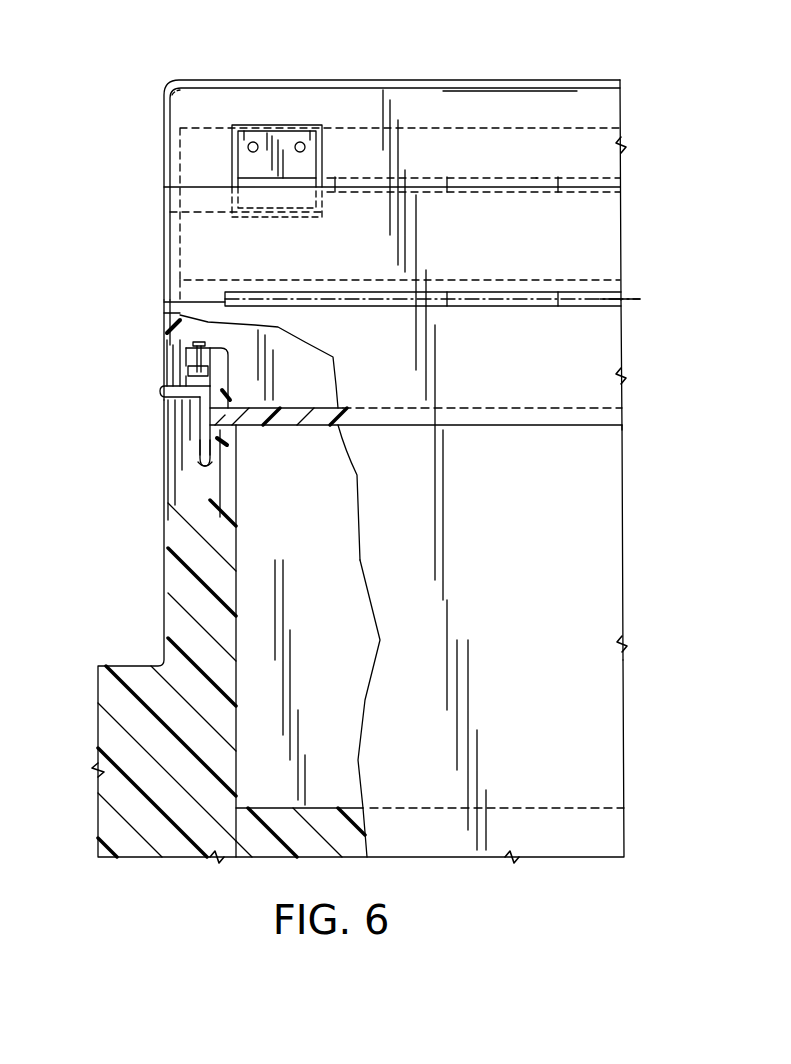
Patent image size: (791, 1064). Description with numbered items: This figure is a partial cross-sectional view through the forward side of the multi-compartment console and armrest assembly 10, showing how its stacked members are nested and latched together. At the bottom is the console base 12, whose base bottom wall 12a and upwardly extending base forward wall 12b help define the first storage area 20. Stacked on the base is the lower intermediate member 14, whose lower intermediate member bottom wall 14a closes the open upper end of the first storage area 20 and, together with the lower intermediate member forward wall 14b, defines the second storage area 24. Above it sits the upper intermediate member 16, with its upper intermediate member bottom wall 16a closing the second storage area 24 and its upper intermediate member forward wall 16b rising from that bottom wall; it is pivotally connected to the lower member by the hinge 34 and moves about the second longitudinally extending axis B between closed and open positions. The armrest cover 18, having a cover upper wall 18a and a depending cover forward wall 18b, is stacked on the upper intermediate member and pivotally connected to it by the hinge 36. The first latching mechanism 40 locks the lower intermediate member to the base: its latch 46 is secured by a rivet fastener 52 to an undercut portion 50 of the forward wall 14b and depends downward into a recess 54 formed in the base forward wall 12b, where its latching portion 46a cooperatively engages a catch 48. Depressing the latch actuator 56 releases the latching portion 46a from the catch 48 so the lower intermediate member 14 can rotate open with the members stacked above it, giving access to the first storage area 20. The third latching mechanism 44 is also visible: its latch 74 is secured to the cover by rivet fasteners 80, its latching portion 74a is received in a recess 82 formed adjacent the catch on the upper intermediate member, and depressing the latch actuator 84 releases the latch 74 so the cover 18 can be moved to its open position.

The multi-compartment console and armrest assembly 10 is at (97, 76).
The console base 12 is at (630, 715).
The base bottom wall 12a is at (345, 846).
The base forward wall 12b is at (178, 588).
The lower intermediate member 14 is at (627, 343).
The lower intermediate member bottom wall 14a is at (320, 430).
The lower intermediate member forward wall 14b is at (166, 326).
The upper intermediate member 16 is at (627, 221).
The upper intermediate member bottom wall 16a is at (440, 277).
The upper intermediate member forward wall 16b is at (164, 243).
The armrest cover 18 is at (627, 93).
The cover upper wall 18a is at (487, 104).
The cover forward wall 18b is at (164, 141).
The first storage area 20 is at (316, 659).
The second storage area 24 is at (291, 376).
The hinge 34 is at (455, 306).
The hinge 36 is at (468, 178).
The first latching mechanism 40 is at (165, 420).
The third latching mechanism 44 is at (298, 100).
The latch 46 is at (200, 437).
The latching portion 46a is at (208, 466).
The catch 48 is at (220, 443).
The undercut portion 50 is at (222, 345).
The rivet fastener 52 is at (198, 342).
The recess 54 is at (205, 520).
The latch actuator 56 is at (164, 385).
The latch 74 is at (272, 112).
The latching portion 74a is at (294, 206).
The rivet fasteners 80 is at (251, 140).
The recess 82 is at (168, 206).
The latch actuator 84 is at (303, 171).
The second longitudinally extending axis B is at (628, 297).